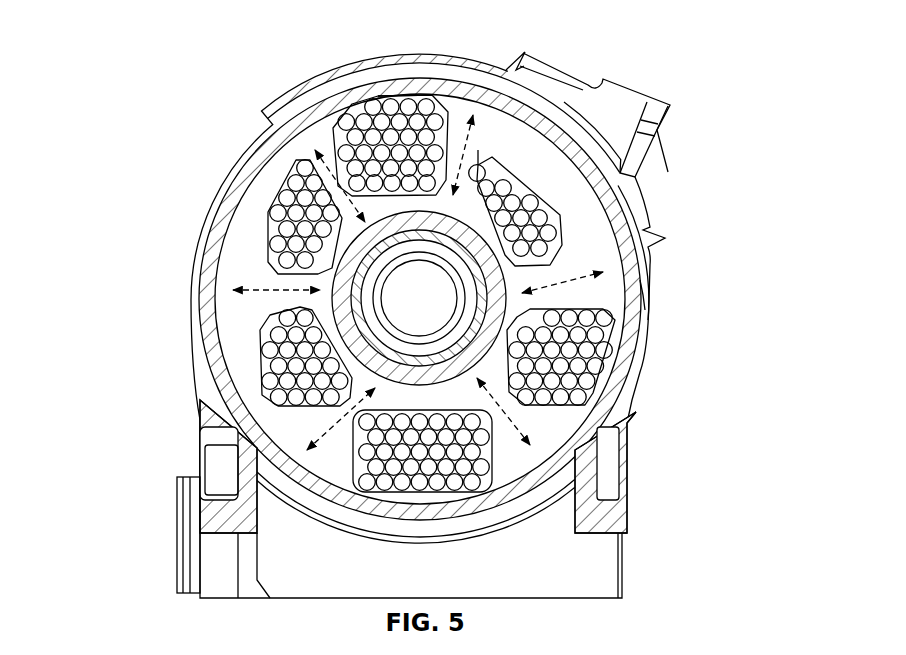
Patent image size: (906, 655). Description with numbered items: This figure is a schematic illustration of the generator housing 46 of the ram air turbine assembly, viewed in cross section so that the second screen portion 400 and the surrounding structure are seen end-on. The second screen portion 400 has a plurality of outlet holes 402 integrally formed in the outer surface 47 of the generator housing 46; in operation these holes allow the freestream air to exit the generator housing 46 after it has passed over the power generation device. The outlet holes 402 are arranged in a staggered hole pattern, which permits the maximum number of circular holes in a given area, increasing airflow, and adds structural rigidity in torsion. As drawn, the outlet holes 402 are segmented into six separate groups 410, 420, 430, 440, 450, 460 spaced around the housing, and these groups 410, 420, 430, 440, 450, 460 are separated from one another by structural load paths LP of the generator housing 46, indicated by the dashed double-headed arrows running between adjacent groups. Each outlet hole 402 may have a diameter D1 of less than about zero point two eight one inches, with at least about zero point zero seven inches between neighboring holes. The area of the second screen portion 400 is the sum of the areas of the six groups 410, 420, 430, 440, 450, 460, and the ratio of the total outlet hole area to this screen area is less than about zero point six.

The generator housing 46 is at (129, 352).
The outer surface 47 is at (630, 293).
The second screen portion 400 is at (237, 368).
The outlet holes 402 is at (427, 97).
The first group of outlet holes 410 is at (342, 110).
The second group of outlet holes 420 is at (565, 230).
The third group of outlet holes 430 is at (600, 392).
The fourth group of outlet holes 440 is at (495, 450).
The fifth group of outlet holes 450 is at (255, 343).
The sixth group of outlet holes 460 is at (272, 192).
The structural load paths LP is at (323, 180).
The diameter of outlet hole D1 is at (480, 157).